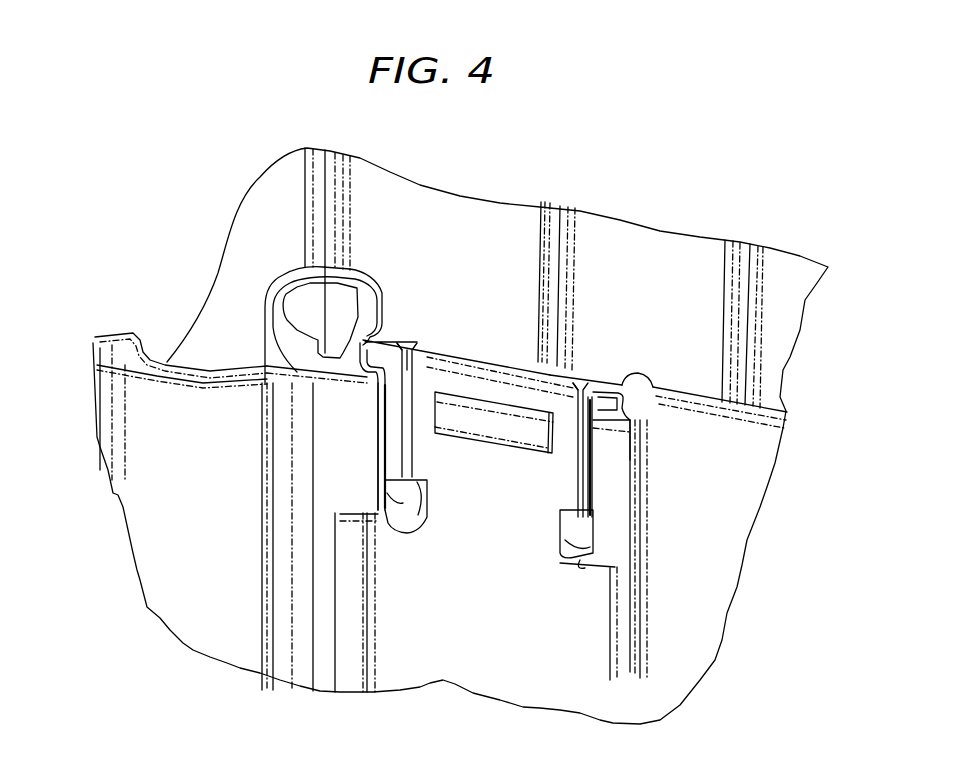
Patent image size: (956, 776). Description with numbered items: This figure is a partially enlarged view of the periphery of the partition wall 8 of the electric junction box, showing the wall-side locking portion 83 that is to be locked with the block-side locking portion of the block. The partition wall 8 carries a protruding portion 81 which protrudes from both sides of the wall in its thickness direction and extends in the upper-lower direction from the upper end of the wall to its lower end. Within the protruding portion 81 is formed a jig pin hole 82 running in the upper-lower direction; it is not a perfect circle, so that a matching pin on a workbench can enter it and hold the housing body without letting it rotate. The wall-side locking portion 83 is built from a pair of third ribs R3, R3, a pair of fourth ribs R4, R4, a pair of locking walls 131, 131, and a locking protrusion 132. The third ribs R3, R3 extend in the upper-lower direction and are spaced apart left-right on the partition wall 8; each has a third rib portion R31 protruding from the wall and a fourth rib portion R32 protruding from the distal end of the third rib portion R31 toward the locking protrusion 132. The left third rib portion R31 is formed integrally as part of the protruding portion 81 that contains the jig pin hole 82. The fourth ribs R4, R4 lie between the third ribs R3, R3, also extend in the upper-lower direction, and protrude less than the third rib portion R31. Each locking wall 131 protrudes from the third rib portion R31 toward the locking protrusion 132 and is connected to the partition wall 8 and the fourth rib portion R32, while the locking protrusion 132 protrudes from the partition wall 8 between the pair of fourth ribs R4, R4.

The partition wall 8 is at (750, 453).
The protruding portion 81 is at (277, 608).
The jig pin hole 82 is at (283, 292).
The wall-side locking portion 83 is at (663, 567).
The locking wall 131 is at (397, 497).
The locking protrusion 132 is at (500, 425).
The third rib R3 is at (367, 455).
The third rib portion R31 is at (353, 343).
The fourth rib portion R32 is at (360, 430).
The fourth rib R4 is at (413, 352).